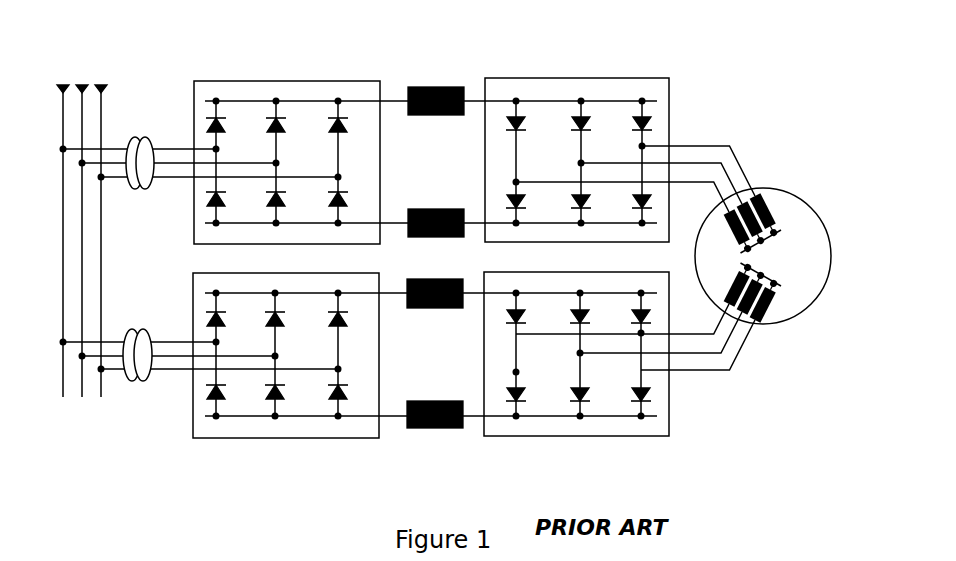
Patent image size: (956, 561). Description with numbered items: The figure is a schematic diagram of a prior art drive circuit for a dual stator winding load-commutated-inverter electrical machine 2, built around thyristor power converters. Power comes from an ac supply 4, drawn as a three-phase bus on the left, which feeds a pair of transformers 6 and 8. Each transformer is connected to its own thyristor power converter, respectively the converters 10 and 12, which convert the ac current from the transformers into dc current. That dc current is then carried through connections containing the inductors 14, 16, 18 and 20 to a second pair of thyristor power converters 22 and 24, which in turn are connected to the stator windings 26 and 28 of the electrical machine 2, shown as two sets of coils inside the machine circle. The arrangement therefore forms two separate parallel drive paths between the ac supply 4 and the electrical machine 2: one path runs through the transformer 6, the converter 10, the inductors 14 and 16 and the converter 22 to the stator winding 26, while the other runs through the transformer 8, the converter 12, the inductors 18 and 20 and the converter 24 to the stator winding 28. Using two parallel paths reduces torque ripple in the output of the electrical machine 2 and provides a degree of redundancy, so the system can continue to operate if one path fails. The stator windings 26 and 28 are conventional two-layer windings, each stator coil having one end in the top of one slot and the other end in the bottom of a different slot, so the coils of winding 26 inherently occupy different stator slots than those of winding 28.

The electrical machine 2 is at (764, 160).
The ac supply 4 is at (97, 66).
The transformer 6 is at (136, 136).
The transformer 8 is at (142, 382).
The thyristor power converter 10 is at (288, 80).
The thyristor power converter 12 is at (278, 440).
The inductor 14 is at (420, 87).
The inductor 16 is at (432, 209).
The inductor 18 is at (437, 308).
The inductor 20 is at (423, 429).
The thyristor power converter 22 is at (580, 78).
The thyristor power converter 24 is at (605, 436).
The stator winding 26 is at (790, 192).
The stator winding 28 is at (795, 318).